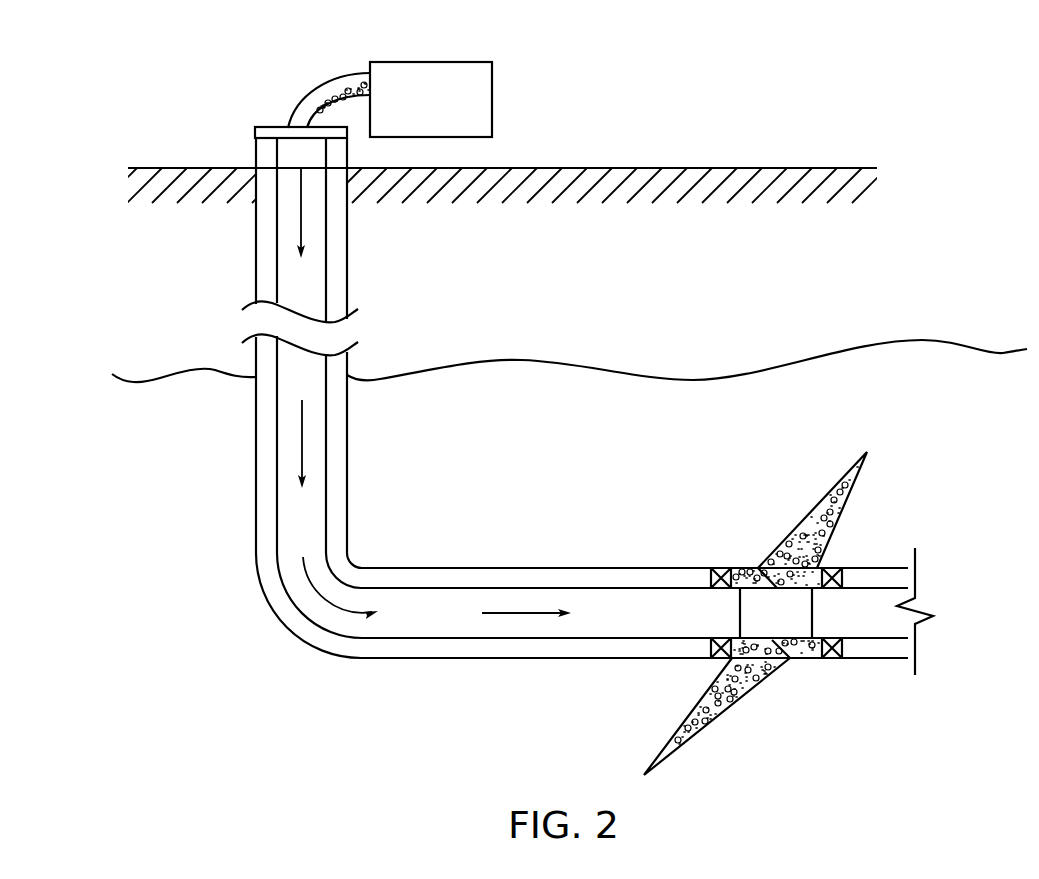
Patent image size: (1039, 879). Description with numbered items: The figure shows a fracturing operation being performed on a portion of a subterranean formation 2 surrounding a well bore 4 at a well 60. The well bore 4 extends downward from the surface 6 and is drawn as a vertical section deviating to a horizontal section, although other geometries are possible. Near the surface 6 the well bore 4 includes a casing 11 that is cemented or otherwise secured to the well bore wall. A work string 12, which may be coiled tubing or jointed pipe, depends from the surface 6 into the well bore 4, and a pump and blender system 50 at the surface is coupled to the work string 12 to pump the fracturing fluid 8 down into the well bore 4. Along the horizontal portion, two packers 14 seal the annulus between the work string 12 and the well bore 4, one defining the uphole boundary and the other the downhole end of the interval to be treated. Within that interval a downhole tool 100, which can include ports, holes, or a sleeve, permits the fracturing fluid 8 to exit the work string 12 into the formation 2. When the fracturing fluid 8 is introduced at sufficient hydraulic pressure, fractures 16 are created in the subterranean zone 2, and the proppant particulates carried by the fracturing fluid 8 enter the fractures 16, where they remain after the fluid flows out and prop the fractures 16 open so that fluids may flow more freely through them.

The subterranean formation 2 is at (582, 390).
The well bore 4 is at (275, 258).
The surface 6 is at (675, 168).
The fracturing fluid 8 is at (315, 95).
The casing 11 is at (255, 285).
The work string 12 is at (277, 485).
The packers 14 is at (718, 567).
The fractures 16 is at (814, 504).
The pump and blender system 50 is at (430, 62).
The well 60 is at (280, 648).
The downhole tool 100 is at (778, 607).